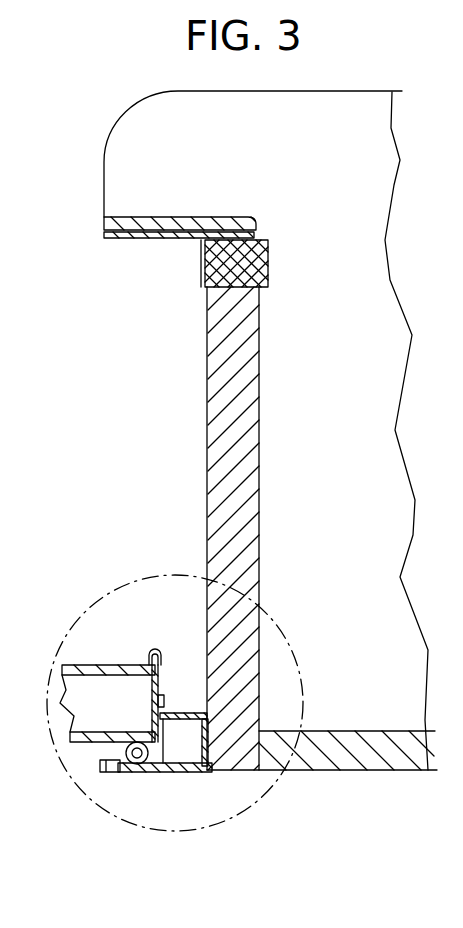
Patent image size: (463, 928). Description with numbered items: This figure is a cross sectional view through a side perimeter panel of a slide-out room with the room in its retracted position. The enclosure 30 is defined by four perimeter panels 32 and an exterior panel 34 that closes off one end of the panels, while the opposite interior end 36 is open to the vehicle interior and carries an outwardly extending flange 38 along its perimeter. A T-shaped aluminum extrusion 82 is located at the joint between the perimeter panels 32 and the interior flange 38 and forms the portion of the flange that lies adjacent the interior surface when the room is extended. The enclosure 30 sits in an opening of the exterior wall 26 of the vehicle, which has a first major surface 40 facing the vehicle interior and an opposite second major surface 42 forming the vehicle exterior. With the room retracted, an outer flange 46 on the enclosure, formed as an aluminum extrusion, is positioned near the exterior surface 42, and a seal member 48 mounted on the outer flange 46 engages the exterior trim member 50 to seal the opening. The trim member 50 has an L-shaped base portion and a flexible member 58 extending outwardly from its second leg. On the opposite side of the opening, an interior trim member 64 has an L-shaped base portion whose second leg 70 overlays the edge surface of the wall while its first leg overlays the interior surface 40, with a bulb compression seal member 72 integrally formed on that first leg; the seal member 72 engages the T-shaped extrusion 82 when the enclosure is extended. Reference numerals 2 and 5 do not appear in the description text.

The floor 2 is at (455, 765).
The floor surface 5 is at (277, 775).
The exterior wall 26 is at (80, 746).
The enclosure 30 is at (180, 424).
The perimeter panels 32 is at (343, 395).
The exterior panel 34 is at (352, 768).
The interior end 36 is at (347, 107).
The flange 38 is at (141, 239).
The first major surface 40 is at (75, 628).
The second major surface 42 is at (90, 743).
The outer flange 46 is at (217, 775).
The seal member 48 is at (157, 773).
The trim member 50 is at (168, 738).
The flexible member 58 is at (190, 711).
The interior trim member 64 is at (275, 665).
The second leg 70 is at (159, 672).
The seal member 72 is at (148, 643).
The T-shaped aluminum extrusion 82 is at (200, 245).